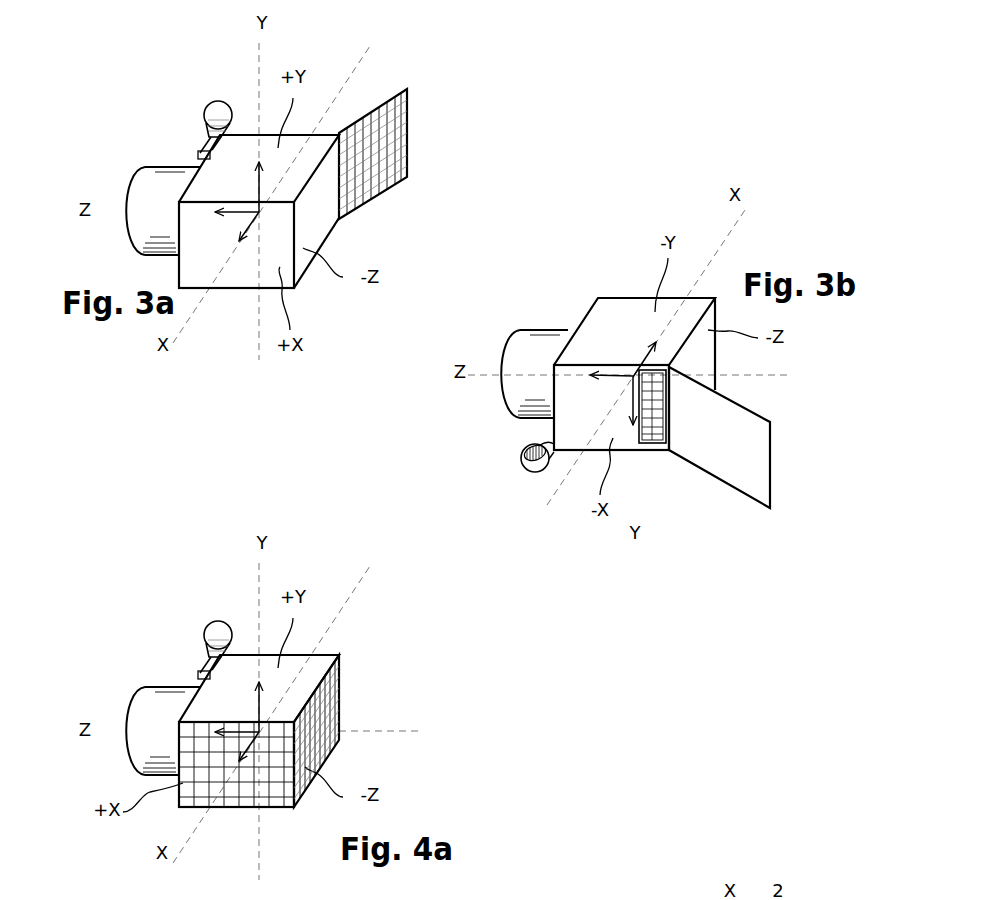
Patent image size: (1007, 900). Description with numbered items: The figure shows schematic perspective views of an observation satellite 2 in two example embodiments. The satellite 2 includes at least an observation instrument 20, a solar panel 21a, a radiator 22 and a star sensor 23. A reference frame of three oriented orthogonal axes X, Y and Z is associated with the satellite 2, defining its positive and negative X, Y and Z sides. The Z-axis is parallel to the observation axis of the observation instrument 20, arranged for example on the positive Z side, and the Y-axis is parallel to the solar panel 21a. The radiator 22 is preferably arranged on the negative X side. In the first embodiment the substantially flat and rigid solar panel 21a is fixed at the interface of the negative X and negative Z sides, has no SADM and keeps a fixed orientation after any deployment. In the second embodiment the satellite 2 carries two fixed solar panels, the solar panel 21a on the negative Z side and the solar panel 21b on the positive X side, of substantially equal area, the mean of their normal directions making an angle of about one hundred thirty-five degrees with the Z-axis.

In FIG. 3a, the satellite 2 is at (323, 65).
In FIG. 3b, the satellite 2 is at (693, 227).
In FIG. 4a, the satellite 2 is at (380, 628).
In FIG. 3a, the observation instrument 20 is at (157, 172).
In FIG. 3b, the observation instrument 20 is at (532, 333).
In FIG. 4a, the observation instrument 20 is at (157, 692).
In FIG. 3a, the solar panel 21a is at (388, 148).
In FIG. 3b, the solar panel 21a is at (755, 450).
In FIG. 4a, the solar panel 21a is at (332, 688).
In FIG. 4a, the solar panel 21b is at (280, 787).
In FIG. 3b, the radiator 22 is at (650, 443).
In FIG. 3a, the star sensor 23 is at (220, 105).
In FIG. 3b, the star sensor 23 is at (549, 433).
In FIG. 4a, the star sensor 23 is at (220, 625).